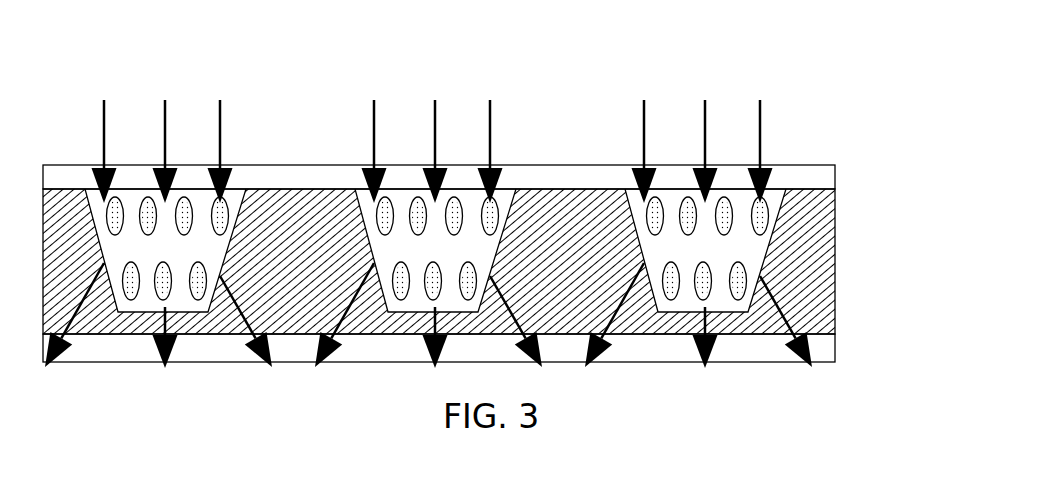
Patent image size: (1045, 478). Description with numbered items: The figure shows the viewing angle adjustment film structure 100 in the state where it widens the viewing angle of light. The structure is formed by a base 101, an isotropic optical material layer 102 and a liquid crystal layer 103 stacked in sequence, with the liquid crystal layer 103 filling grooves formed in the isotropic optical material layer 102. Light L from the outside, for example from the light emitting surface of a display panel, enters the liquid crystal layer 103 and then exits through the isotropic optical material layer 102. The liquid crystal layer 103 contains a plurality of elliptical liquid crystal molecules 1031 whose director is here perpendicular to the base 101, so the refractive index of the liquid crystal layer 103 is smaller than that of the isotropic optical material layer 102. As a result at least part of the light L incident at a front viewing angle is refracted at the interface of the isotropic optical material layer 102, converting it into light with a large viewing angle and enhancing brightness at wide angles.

The viewing angle adjustment film structure 100 is at (78, 71).
The base 101 is at (835, 350).
The isotropic optical material layer 102 is at (835, 285).
The liquid crystal layer 103 is at (835, 178).
The liquid crystal molecules 1031 is at (725, 200).
The light L is at (488, 135).